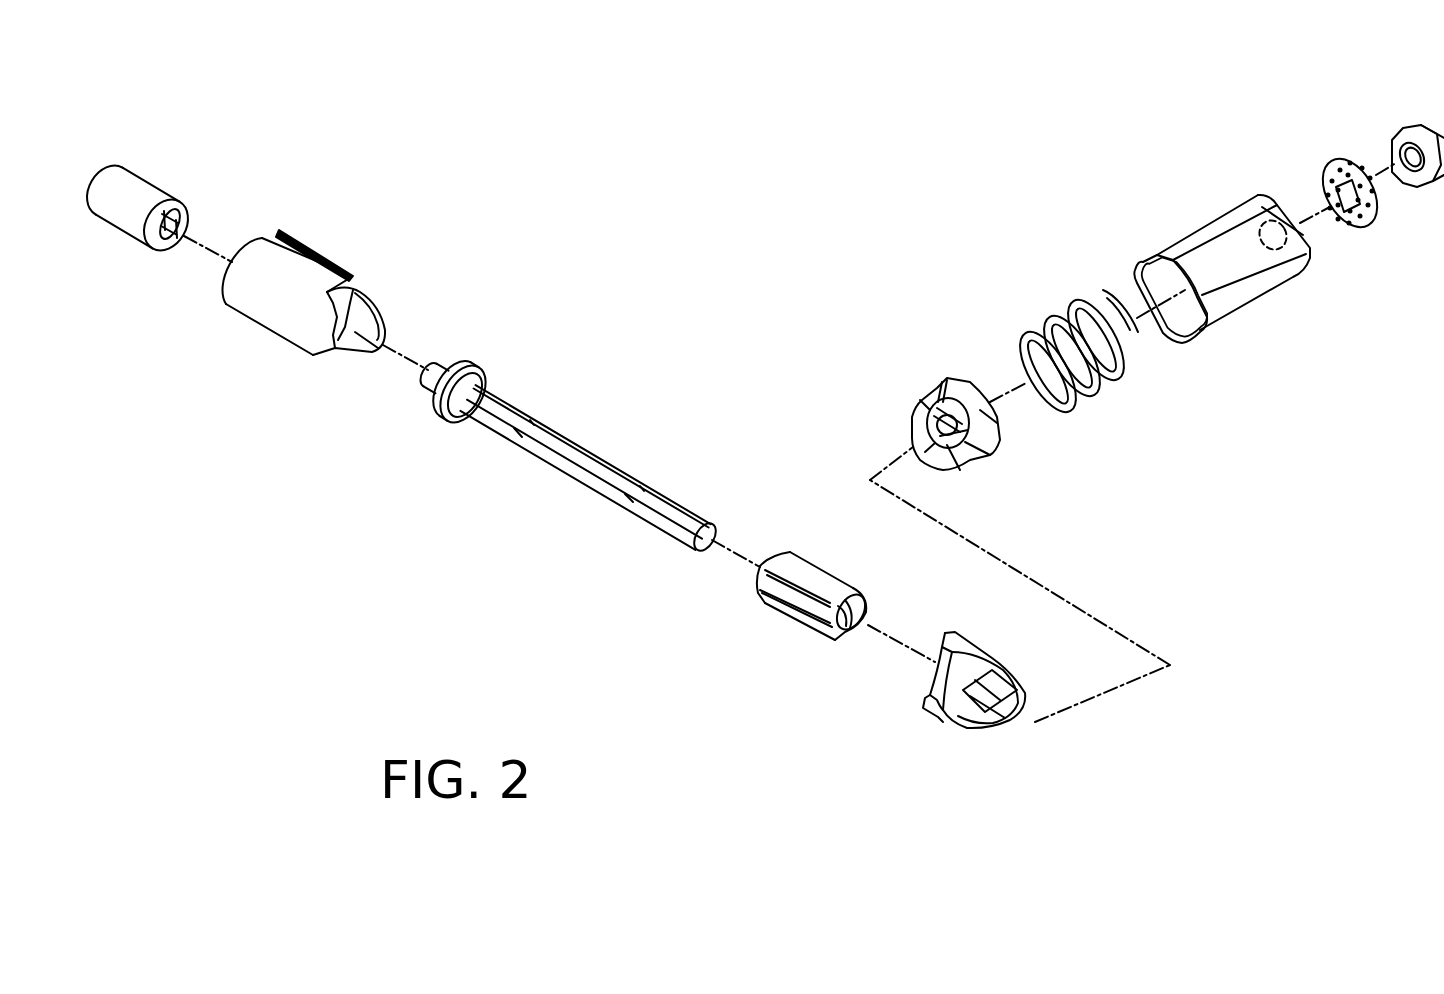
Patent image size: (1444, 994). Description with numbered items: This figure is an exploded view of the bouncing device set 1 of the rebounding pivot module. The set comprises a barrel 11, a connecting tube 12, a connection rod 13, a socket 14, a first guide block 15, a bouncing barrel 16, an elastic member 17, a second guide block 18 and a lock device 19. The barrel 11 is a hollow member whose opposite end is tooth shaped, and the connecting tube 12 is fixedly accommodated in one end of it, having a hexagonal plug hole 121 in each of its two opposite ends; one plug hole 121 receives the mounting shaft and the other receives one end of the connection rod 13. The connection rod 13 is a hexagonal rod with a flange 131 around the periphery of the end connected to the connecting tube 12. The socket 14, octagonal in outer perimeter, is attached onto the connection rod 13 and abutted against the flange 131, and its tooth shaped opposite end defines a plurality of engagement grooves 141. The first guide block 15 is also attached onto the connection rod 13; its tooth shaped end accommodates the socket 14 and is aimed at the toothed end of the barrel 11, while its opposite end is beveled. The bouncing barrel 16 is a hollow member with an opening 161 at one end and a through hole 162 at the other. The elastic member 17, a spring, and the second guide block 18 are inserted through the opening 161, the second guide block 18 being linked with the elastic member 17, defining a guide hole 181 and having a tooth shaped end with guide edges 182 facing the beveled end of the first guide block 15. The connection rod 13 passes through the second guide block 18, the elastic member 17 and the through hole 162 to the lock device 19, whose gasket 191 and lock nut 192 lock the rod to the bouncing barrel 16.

The bouncing device set 1 is at (649, 123).
The barrel 11 is at (345, 255).
The connecting tube 12 is at (168, 178).
The plug hole 121 is at (177, 220).
The connection rod 13 is at (585, 440).
The flange 131 is at (440, 397).
The socket 14 is at (787, 618).
The engagement grooves 141 is at (867, 607).
The first guide block 15 is at (918, 702).
The bouncing barrel 16 is at (1197, 212).
The opening 161 is at (1140, 272).
The through hole 162 is at (1228, 207).
The elastic member 17 is at (1057, 308).
The second guide block 18 is at (910, 390).
The guide hole 181 is at (930, 438).
The guide edges 182 is at (950, 420).
The lock device 19 is at (1337, 130).
The gasket 191 is at (1320, 185).
The lock nut 192 is at (1420, 137).